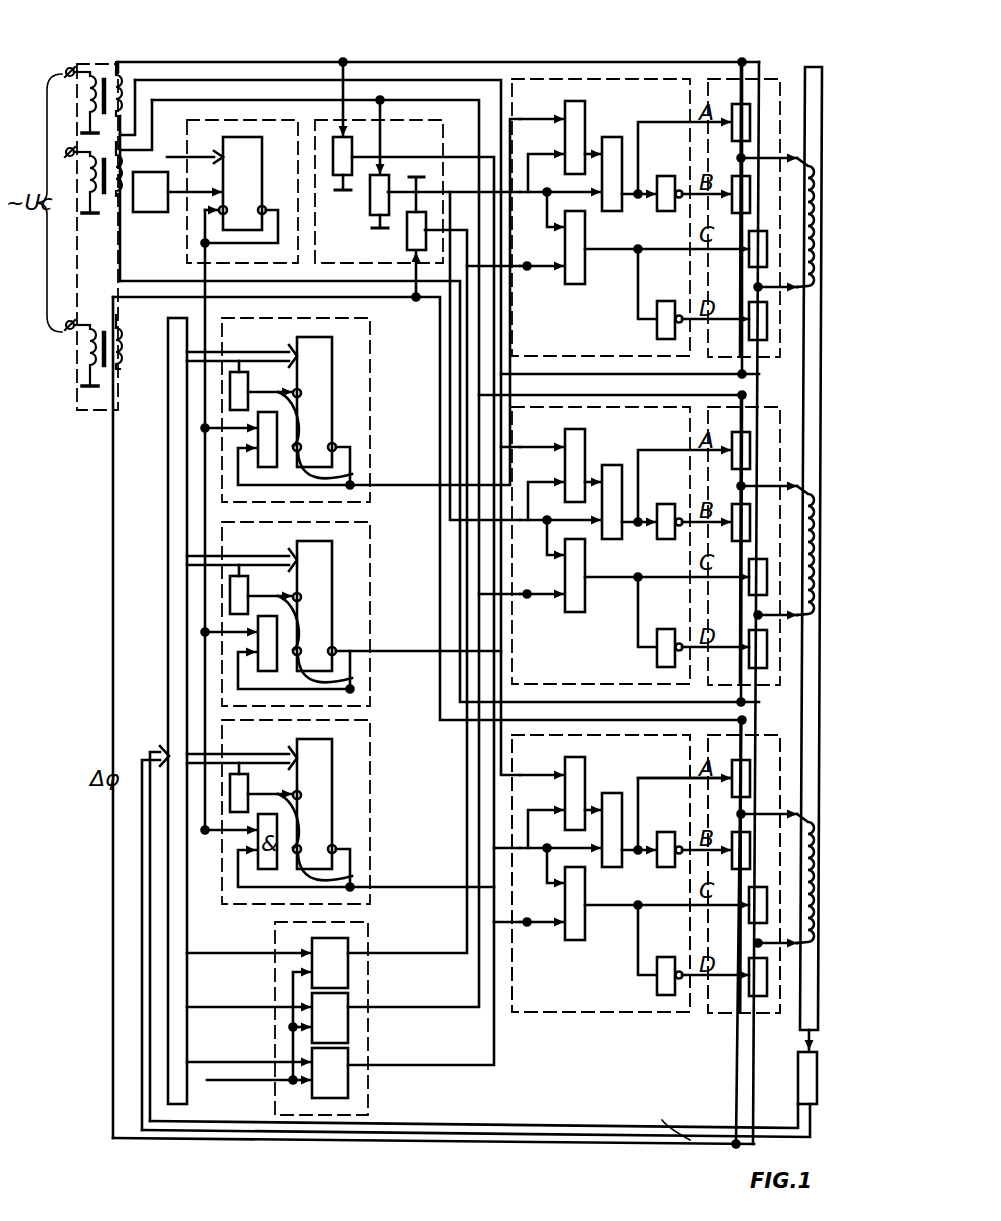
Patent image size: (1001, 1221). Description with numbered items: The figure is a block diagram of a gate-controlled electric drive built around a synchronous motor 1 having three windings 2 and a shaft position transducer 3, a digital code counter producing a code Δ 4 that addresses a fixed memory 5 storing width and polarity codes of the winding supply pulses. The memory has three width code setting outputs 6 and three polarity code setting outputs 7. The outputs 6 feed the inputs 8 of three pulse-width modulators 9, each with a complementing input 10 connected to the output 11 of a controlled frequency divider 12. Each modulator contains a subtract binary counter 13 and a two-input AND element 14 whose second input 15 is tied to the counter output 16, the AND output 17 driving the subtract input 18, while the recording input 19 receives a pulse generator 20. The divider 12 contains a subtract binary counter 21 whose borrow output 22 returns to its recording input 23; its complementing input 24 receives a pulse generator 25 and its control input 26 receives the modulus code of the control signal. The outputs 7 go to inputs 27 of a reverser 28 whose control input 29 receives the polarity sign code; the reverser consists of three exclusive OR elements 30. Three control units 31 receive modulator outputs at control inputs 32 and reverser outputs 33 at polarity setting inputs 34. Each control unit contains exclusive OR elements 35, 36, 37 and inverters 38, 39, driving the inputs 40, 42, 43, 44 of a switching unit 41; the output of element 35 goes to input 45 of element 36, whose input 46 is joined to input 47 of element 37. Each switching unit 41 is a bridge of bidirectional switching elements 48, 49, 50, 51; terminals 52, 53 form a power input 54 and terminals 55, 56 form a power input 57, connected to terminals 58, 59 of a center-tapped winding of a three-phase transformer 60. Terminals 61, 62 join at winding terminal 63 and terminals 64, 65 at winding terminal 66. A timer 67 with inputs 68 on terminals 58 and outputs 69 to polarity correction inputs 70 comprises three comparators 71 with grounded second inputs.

The synchronous motor 1 is at (820, 1006).
The windings 2 is at (827, 878).
The shaft position transducer 3 is at (818, 1085).
The code Δ 4 is at (153, 750).
The fixed memory 5 is at (168, 695).
The width code setting outputs 6 is at (190, 348).
The polarity code setting outputs 7 is at (196, 953).
The inputs of the pulse-width modulators 8 is at (210, 350).
The pulse-width modulators 9 is at (373, 333).
The complementing input 10 is at (203, 412).
The output of the controlled frequency divider 11 is at (200, 281).
The controlled frequency divider 12 is at (230, 147).
The subtract binary counter 13 is at (315, 402).
The two-input AND element 14 is at (256, 462).
The second input of the AND element 15 is at (240, 433).
The output of the counter 16 is at (340, 443).
The output of the AND element 17 is at (277, 408).
The subtract input of the counter 18 is at (355, 470).
The recording input of the counter 19 is at (294, 388).
The pulse generator 20 is at (261, 368).
The subtract binary counter 21 is at (242, 183).
The borrow output 22 is at (268, 205).
The recording input 23 is at (214, 212).
The complementing input of the controlled frequency divider 24 is at (196, 180).
The pulse generator 25 is at (150, 192).
The control input of the controlled frequency divider 26 is at (220, 154).
The inputs of the reverser 27 is at (275, 953).
The reverser 28 is at (312, 1003).
The control input of the reverser 29 is at (292, 1082).
The exclusive OR elements 30 is at (352, 938).
The control units 31 is at (600, 732).
The control input of the control unit 32 is at (520, 772).
The outputs of the reverser 33 is at (370, 953).
The polarity setting input 34 is at (520, 920).
The exclusive OR element 35 is at (564, 797).
The exclusive OR element 36 is at (616, 868).
The exclusive OR element 37 is at (585, 922).
The inverter 38 is at (662, 868).
The inverter 39 is at (657, 986).
The input of the switching unit 40 is at (749, 898).
The switching unit 41 is at (784, 746).
The input of the switching unit 42 is at (739, 974).
The input of the switching unit 43 is at (732, 774).
The input of the switching unit 44 is at (732, 856).
The input of exclusive OR element 36 45 is at (594, 805).
The input of exclusive OR element 36 46 is at (546, 829).
The input of exclusive OR element 37 47 is at (552, 892).
The switching element 48 is at (784, 769).
The switching element 49 is at (760, 852).
The switching element 50 is at (785, 890).
The switching element 51 is at (752, 1001).
The terminal of switching element 48 52 is at (746, 755).
The terminal of switching element 50 53 is at (819, 854).
The power input of the switching unit 54 is at (738, 744).
The terminal of switching element 49 55 is at (770, 895).
The terminal of switching element 51 56 is at (762, 998).
The power input of the switching unit 57 is at (740, 378).
The terminal of the transformer output winding 58 is at (120, 66).
The terminal of the transformer output winding 59 is at (128, 142).
The three-phase transformer 60 is at (122, 258).
The terminal of switching element 48 61 is at (738, 810).
The terminal of switching element 49 62 is at (745, 845).
The terminal of the winding 63 is at (800, 810).
The terminal of switching element 50 64 is at (760, 940).
The terminal of switching element 51 65 is at (745, 950).
The terminal of the winding 66 is at (802, 943).
The timer 67 is at (385, 147).
The inputs of the timer 68 is at (347, 70).
The outputs of the timer 69 is at (445, 157).
The polarity correction inputs 70 is at (520, 846).
The comparators 71 is at (352, 160).